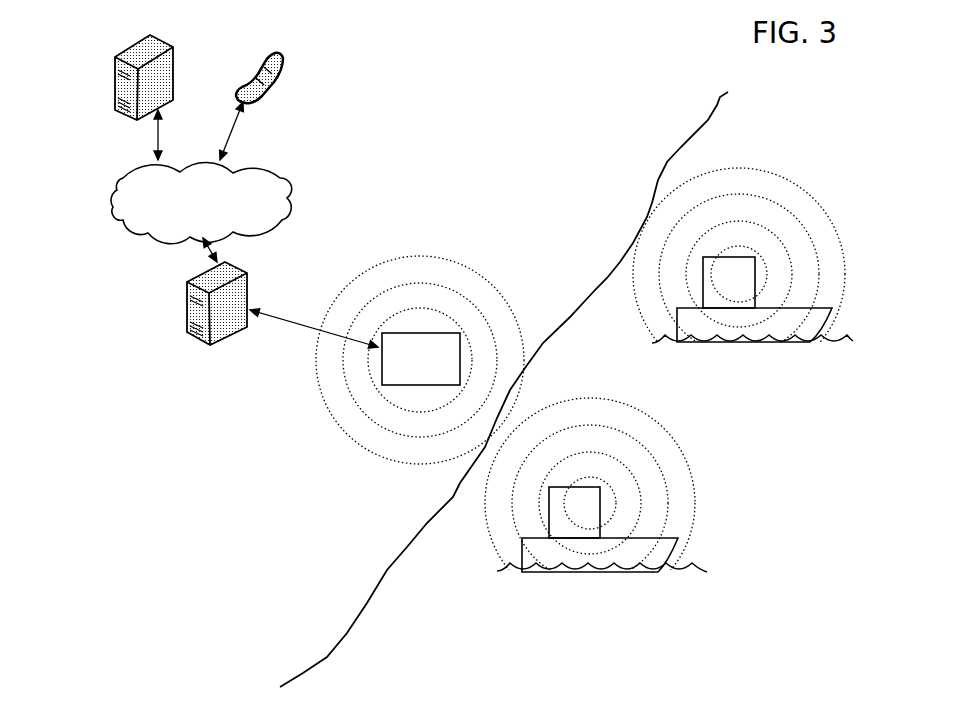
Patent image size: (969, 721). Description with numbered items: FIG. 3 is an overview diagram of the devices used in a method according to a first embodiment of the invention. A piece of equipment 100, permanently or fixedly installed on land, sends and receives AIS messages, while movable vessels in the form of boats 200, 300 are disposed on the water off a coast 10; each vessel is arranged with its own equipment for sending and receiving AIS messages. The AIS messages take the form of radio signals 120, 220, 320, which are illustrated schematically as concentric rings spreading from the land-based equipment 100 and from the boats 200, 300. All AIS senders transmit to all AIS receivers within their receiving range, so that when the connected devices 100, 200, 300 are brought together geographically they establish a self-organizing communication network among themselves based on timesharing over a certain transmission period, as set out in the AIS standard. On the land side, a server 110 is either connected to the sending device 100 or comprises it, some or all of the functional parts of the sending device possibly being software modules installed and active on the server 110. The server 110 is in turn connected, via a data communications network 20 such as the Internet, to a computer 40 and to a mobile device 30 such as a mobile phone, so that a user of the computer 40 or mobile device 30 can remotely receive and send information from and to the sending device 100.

The coast 10 is at (329, 581).
The data communications network 20 is at (283, 177).
The mobile device 30 is at (283, 73).
The computer 40 is at (115, 74).
The equipment 100 is at (382, 372).
The server 110 is at (187, 322).
The radio signals 120 is at (348, 431).
The boat 200 is at (675, 537).
The radio signals 220 is at (687, 468).
The boat 300 is at (797, 310).
The radio signals 320 is at (765, 172).